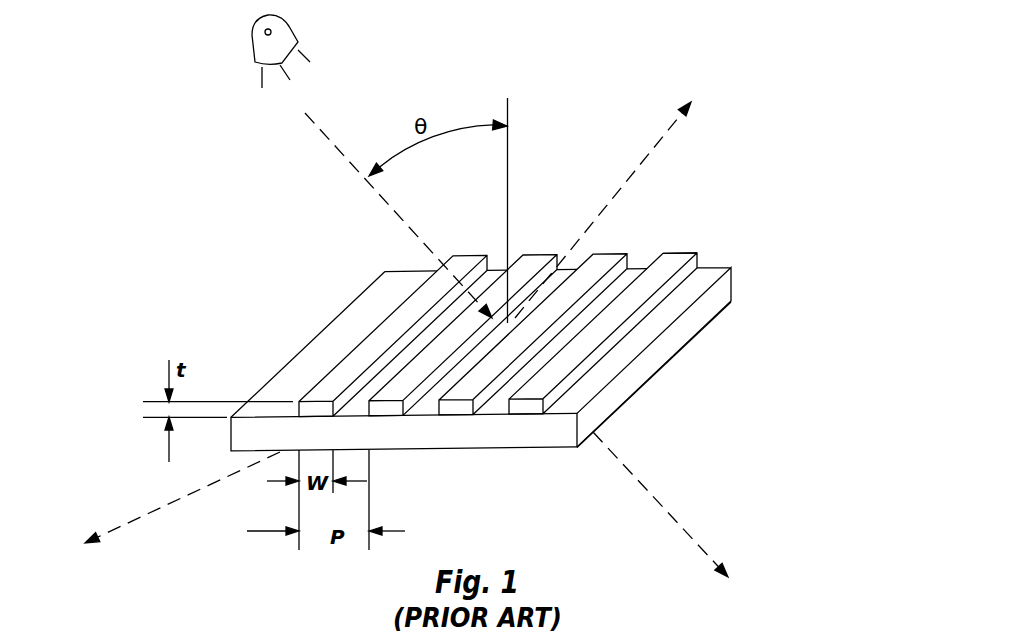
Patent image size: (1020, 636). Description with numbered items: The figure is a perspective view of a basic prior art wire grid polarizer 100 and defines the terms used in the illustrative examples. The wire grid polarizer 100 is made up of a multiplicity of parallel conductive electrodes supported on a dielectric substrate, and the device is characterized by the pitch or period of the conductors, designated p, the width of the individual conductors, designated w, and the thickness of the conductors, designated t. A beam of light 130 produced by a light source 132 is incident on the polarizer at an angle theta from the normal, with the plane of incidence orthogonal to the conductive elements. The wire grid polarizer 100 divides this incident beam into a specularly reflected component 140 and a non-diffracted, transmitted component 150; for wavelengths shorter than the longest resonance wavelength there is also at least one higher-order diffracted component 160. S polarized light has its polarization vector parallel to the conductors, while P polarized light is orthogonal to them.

The wire grid polarizer 100 is at (753, 350).
The beam of light 130 is at (340, 157).
The light source 132 is at (284, 23).
The specularly reflected component 140 is at (628, 178).
The transmitted component 150 is at (647, 487).
The higher-order diffracted component 160 is at (152, 512).